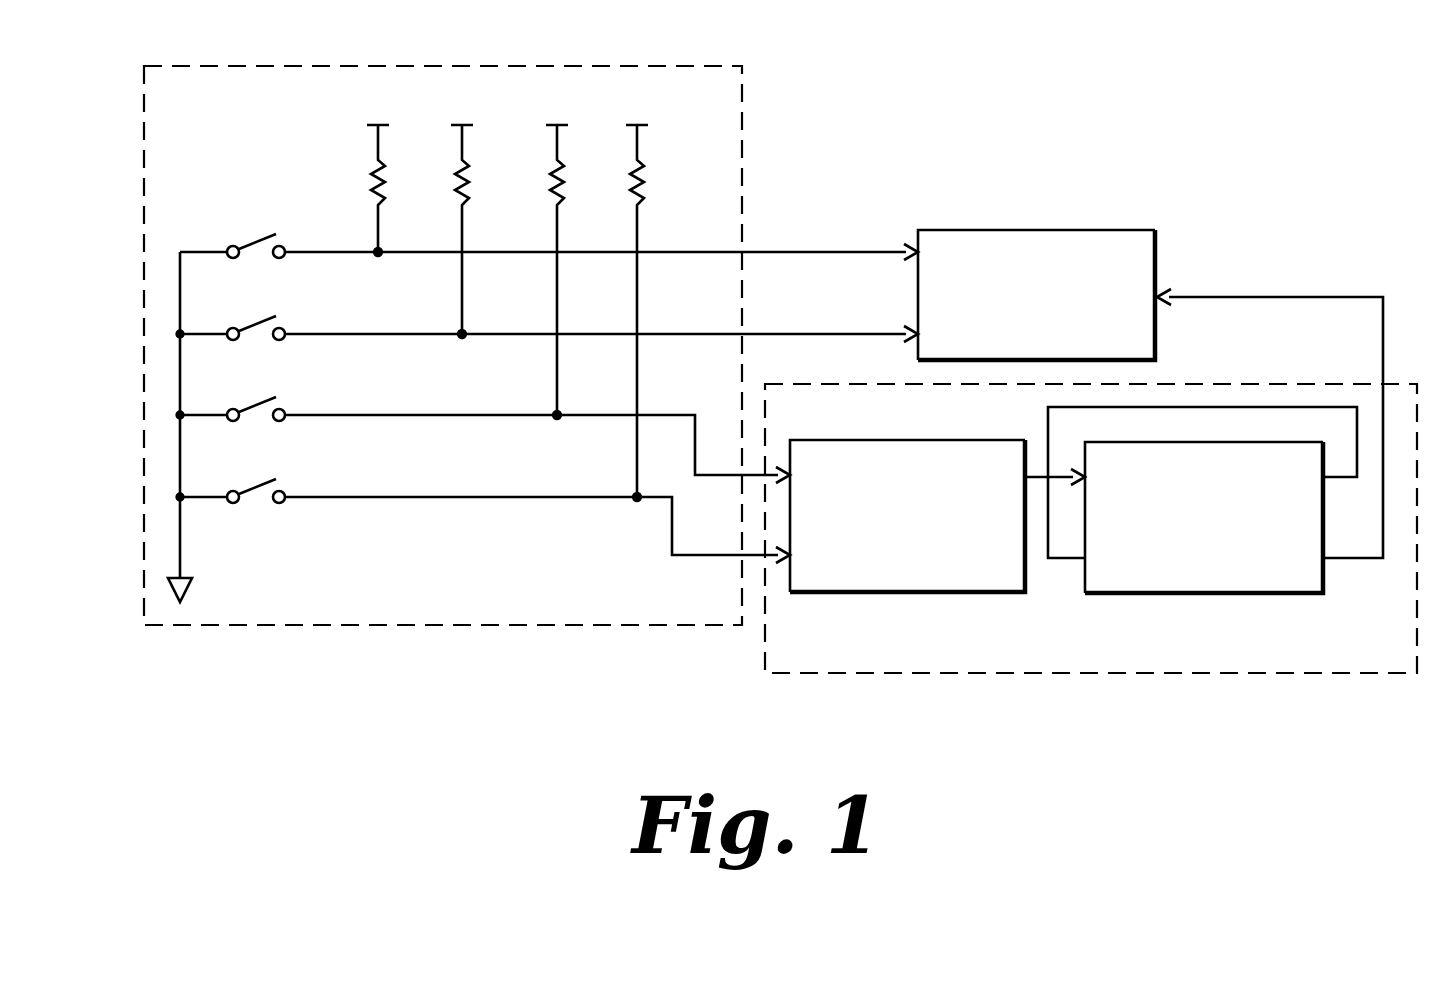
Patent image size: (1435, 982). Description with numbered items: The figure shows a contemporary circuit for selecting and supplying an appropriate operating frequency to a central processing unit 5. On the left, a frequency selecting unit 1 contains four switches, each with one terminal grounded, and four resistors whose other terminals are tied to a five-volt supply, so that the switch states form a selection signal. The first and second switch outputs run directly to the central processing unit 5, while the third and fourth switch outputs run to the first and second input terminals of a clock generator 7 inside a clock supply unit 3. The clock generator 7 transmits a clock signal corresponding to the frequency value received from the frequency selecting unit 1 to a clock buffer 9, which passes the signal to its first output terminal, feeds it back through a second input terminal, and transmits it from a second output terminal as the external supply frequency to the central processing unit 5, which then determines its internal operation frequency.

The frequency selecting unit 1 is at (474, 66).
The clock supply unit 3 is at (1268, 678).
The central processing unit 5 is at (1043, 230).
The clock generator 7 is at (905, 595).
The clock buffer 9 is at (1203, 596).